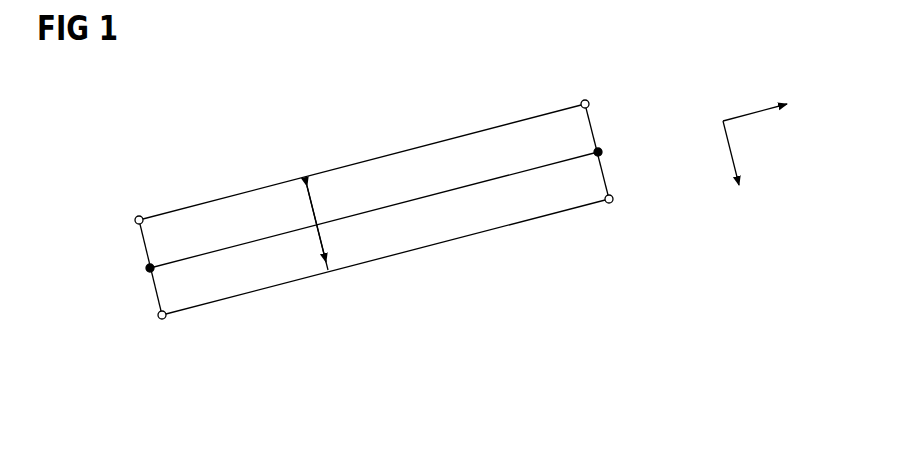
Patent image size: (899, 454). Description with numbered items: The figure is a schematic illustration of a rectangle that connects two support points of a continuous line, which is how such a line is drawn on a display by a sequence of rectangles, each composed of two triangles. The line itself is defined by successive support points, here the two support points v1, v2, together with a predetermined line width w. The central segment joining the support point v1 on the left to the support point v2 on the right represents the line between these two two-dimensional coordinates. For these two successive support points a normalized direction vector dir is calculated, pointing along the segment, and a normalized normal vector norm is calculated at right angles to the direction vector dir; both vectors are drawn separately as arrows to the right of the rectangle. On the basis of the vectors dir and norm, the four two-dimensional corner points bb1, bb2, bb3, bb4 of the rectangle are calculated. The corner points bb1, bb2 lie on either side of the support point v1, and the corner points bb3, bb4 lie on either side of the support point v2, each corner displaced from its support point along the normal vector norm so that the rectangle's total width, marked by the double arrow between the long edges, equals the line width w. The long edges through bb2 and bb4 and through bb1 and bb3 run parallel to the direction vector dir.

The corner point bb1 is at (183, 329).
The corner point bb2 is at (135, 204).
The corner point bb3 is at (631, 211).
The corner point bb4 is at (609, 104).
The support point v1 is at (128, 275).
The support point v2 is at (617, 154).
The line width w is at (322, 224).
The normalized direction vector dir is at (771, 109).
The normalized normal vector norm is at (752, 169).